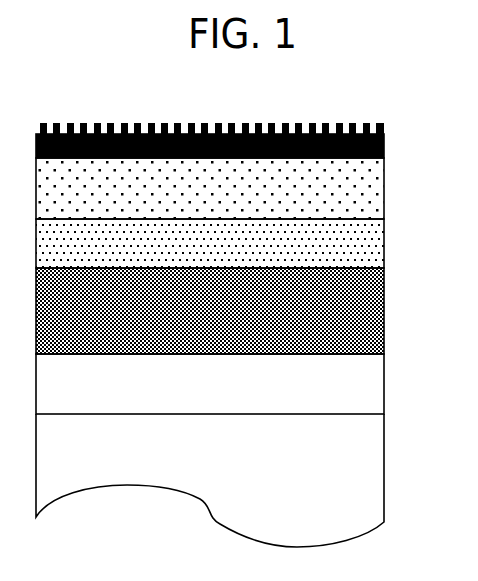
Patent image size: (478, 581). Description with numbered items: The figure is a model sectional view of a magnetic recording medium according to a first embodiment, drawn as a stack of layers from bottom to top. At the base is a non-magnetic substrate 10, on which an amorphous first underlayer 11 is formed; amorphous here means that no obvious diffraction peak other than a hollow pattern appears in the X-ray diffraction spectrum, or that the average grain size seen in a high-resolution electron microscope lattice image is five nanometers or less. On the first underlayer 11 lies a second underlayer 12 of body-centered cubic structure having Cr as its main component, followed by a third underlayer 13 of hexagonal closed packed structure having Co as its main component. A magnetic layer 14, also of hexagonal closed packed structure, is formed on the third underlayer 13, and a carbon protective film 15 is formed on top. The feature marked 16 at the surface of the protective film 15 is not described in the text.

The non-magnetic substrate 10 is at (374, 467).
The amorphous first underlayer 11 is at (375, 384).
The second underlayer 12 is at (373, 310).
The third underlayer 13 is at (376, 242).
The magnetic layer 14 is at (378, 183).
The carbon protective film 15 is at (384, 146).
The uneven surface structure 16 is at (355, 124).